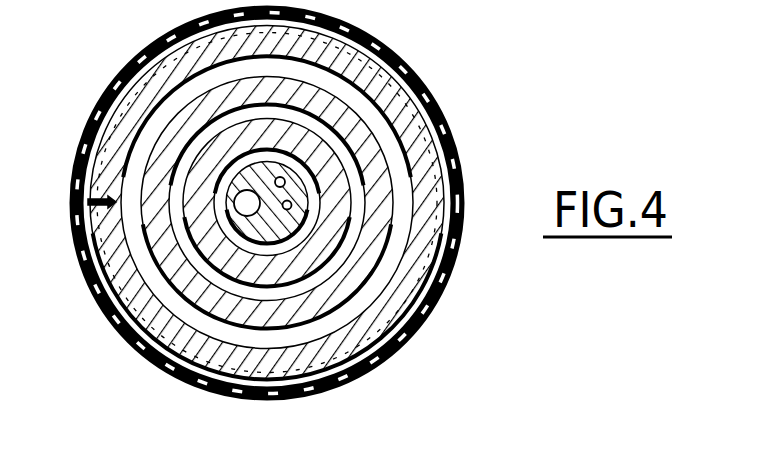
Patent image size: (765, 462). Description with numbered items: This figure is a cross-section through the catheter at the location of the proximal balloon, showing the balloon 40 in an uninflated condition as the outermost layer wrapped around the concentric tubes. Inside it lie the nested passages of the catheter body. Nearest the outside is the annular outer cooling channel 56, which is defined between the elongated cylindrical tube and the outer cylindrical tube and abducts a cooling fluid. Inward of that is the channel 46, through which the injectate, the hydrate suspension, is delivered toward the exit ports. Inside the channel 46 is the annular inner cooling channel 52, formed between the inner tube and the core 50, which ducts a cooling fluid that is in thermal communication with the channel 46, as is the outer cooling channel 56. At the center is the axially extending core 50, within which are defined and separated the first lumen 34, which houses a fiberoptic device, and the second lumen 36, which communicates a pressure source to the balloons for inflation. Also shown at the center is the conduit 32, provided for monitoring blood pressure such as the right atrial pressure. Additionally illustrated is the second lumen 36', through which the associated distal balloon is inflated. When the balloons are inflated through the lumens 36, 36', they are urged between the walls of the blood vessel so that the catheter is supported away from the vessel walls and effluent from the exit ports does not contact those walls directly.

The conduit 32 is at (243, 192).
The first lumen 34 is at (290, 204).
The second lumen 36 is at (380, 112).
The second lumen 36' is at (69, 239).
The balloon 40 is at (332, 381).
The channel 46 is at (226, 292).
The core 50 is at (254, 238).
The annular inner cooling channel 52 is at (302, 238).
The annular outer cooling channel 56 is at (199, 382).